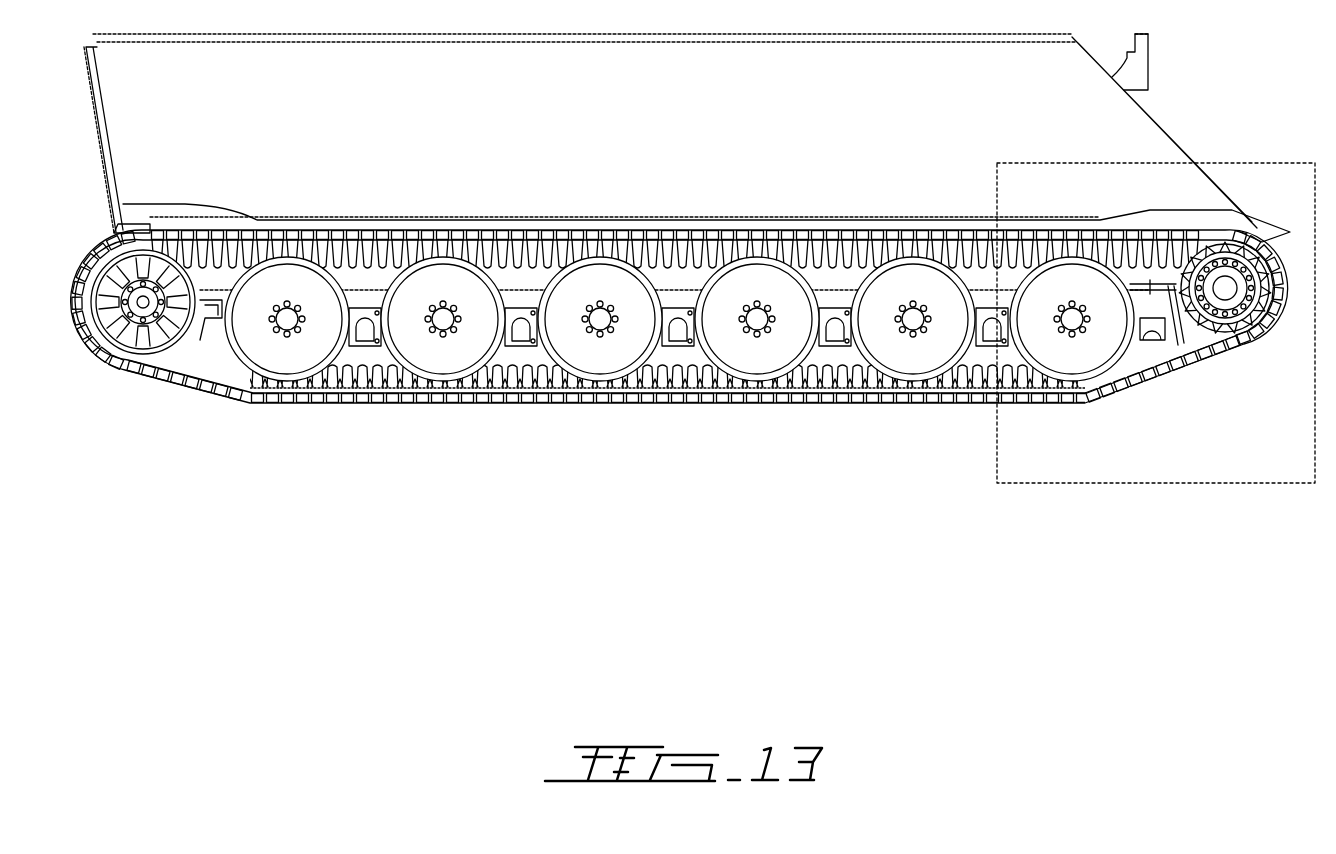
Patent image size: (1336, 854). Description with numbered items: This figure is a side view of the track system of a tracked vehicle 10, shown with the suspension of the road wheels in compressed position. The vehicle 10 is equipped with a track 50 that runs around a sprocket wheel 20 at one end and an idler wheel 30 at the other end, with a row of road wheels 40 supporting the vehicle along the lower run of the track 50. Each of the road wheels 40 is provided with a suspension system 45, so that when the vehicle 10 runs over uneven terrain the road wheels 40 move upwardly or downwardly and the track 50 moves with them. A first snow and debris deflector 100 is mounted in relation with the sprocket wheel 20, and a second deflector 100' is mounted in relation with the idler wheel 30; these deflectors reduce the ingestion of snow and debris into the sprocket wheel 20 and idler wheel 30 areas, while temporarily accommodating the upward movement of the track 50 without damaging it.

The tracked vehicle 10 is at (687, 162).
The sprocket wheel 20 is at (1252, 245).
The idler wheel 30 is at (123, 271).
The road wheels 40 is at (463, 358).
The suspension system 45 is at (979, 353).
The track 50 is at (358, 390).
The snow and debris deflector 100 is at (1192, 367).
The second deflector 100' is at (239, 244).